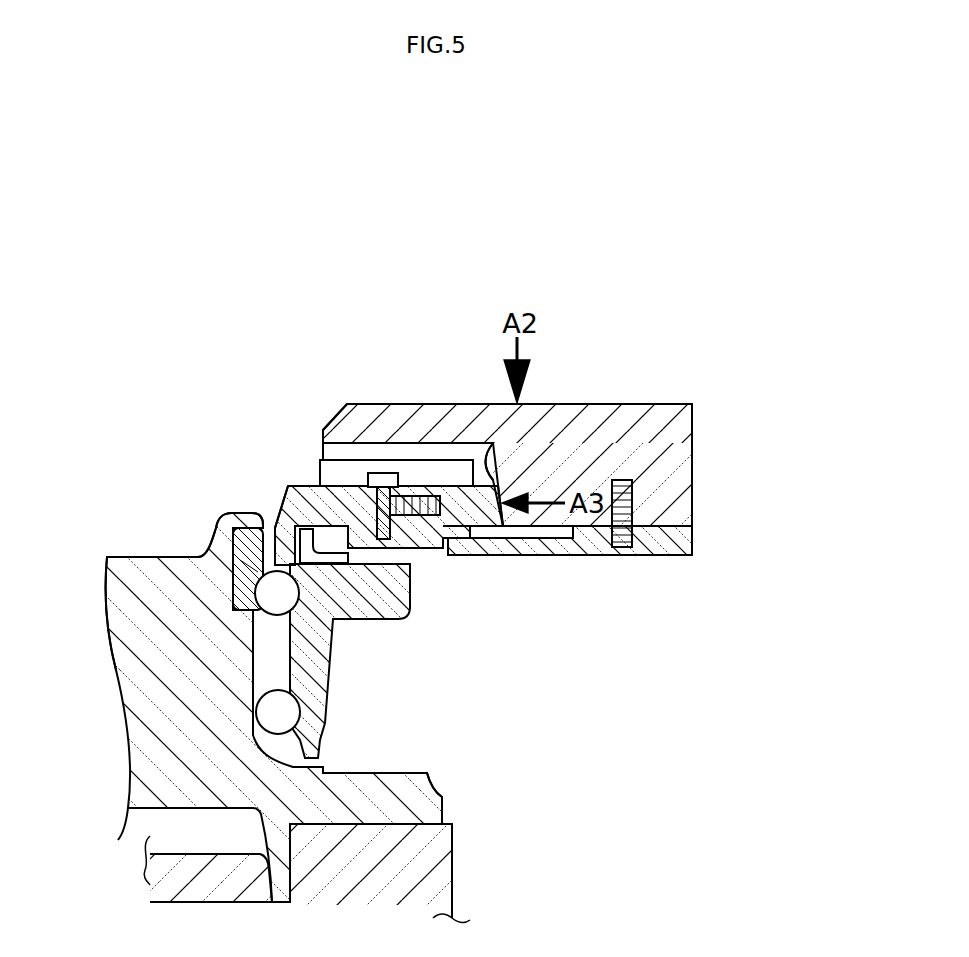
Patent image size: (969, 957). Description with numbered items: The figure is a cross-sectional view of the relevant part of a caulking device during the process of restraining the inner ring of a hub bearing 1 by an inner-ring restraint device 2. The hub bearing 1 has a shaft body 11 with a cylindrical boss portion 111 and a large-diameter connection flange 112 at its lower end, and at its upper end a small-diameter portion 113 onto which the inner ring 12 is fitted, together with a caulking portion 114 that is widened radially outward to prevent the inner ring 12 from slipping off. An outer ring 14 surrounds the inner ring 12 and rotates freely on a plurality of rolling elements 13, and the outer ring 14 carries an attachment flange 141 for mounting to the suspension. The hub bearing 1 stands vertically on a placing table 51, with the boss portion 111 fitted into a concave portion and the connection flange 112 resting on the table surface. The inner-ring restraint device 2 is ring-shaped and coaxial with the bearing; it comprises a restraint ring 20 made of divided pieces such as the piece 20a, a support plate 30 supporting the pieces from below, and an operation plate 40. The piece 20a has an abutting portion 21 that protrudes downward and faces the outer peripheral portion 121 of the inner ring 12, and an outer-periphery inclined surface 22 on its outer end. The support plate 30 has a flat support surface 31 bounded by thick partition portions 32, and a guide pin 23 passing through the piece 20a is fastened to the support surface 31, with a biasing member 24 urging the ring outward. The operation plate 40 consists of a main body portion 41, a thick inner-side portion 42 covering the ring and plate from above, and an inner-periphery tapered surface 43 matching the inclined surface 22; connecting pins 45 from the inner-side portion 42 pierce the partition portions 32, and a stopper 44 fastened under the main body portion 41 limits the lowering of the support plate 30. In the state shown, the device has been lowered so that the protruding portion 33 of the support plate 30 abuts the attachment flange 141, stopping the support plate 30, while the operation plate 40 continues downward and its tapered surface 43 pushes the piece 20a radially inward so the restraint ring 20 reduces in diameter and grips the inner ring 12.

The hub bearing 1 is at (331, 648).
The shaft body 11 is at (123, 627).
The boss portion 111 is at (275, 897).
The connection flange 112 is at (430, 773).
The small-diameter portion 113 is at (121, 622).
The caulking portion 114 is at (222, 510).
The inner ring 12 is at (231, 526).
The outer peripheral portion 121 is at (284, 510).
The rolling elements 13 is at (283, 593).
The outer ring 14 is at (330, 671).
The attachment flange 141 is at (380, 647).
The inner-ring restraint device 2 is at (570, 388).
The restraint ring 20 is at (336, 417).
The piece 20a is at (303, 484).
The abutting portion 21 is at (256, 572).
The outer-periphery inclined surface 22 is at (570, 536).
The guide pin 23 is at (386, 472).
The biasing member 24 is at (452, 470).
The support plate 30 is at (414, 551).
The support surface 31 is at (340, 485).
The partition portion 32 is at (490, 475).
The protruding portion 33 is at (340, 607).
The operation plate 40 is at (568, 384).
The main body portion 41 is at (618, 462).
The inner-side portion 42 is at (357, 433).
The inner-periphery tapered surface 43 is at (506, 450).
The stopper 44 is at (468, 542).
The connecting pin 45 is at (412, 514).
The placing table 51 is at (455, 850).